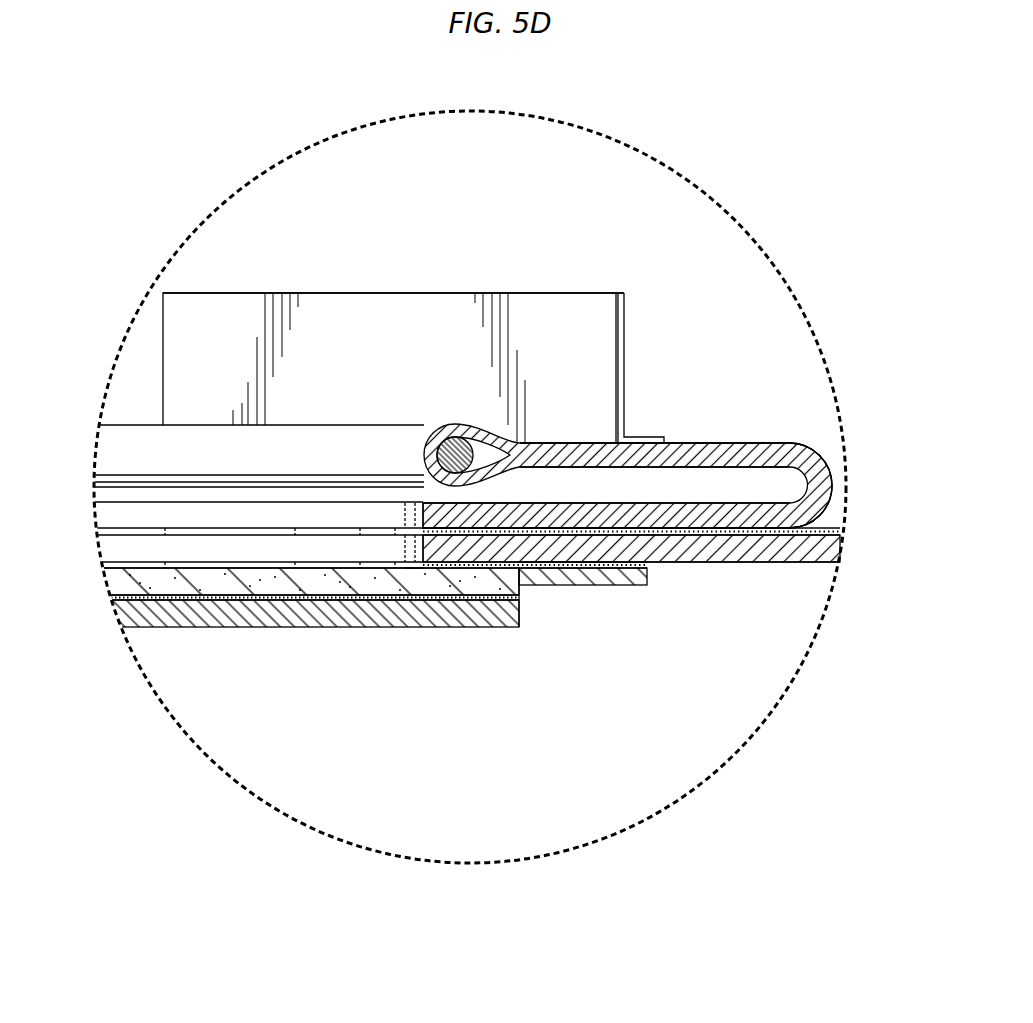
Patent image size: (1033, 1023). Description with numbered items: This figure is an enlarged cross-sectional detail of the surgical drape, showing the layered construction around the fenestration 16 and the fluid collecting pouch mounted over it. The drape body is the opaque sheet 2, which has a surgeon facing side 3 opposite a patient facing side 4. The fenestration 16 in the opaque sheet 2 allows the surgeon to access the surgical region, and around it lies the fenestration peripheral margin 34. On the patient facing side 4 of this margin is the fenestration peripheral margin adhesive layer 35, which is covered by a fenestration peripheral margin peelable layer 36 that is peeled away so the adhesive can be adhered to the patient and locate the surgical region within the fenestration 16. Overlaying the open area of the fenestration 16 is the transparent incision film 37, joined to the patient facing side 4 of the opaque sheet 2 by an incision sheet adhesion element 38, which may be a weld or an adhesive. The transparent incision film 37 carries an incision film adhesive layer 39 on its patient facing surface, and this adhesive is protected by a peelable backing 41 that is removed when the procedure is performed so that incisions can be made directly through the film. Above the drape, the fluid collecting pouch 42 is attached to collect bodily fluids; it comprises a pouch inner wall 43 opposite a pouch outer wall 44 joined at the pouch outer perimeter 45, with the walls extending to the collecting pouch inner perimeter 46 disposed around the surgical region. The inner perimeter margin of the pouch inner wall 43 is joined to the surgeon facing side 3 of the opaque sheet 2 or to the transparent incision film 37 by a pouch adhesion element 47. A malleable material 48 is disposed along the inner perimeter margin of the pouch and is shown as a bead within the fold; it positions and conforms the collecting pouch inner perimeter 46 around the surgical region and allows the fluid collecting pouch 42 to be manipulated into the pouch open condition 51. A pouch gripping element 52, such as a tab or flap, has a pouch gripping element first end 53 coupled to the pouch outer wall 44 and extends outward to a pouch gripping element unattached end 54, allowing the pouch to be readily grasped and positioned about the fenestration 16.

The opaque sheet 2 is at (836, 547).
The surgeon facing side 3 is at (822, 534).
The patient facing side 4 is at (795, 563).
The fenestration 16 is at (423, 548).
The fenestration peripheral margin 34 is at (545, 563).
The fenestration peripheral margin adhesive layer 35 is at (650, 566).
The fenestration peripheral margin peelable layer 36 is at (650, 579).
The transparent incision film 37 is at (304, 620).
The incision sheet adhesion element 38 is at (423, 565).
The incision film adhesive layer 39 is at (520, 600).
The peelable backing 41 is at (468, 623).
The fluid collecting pouch 42 is at (838, 472).
The pouch inner wall 43 is at (707, 510).
The pouch outer wall 44 is at (743, 447).
The pouch outer perimeter 45 is at (828, 455).
The collecting pouch inner perimeter 46 is at (112, 455).
The pouch adhesion element 47 is at (590, 443).
The malleable material 48 is at (462, 432).
The pouch open condition 51 is at (627, 485).
The pouch gripping element 52 is at (409, 288).
The pouch gripping element first end 53 is at (637, 437).
The pouch gripping element unattached end 54 is at (555, 292).